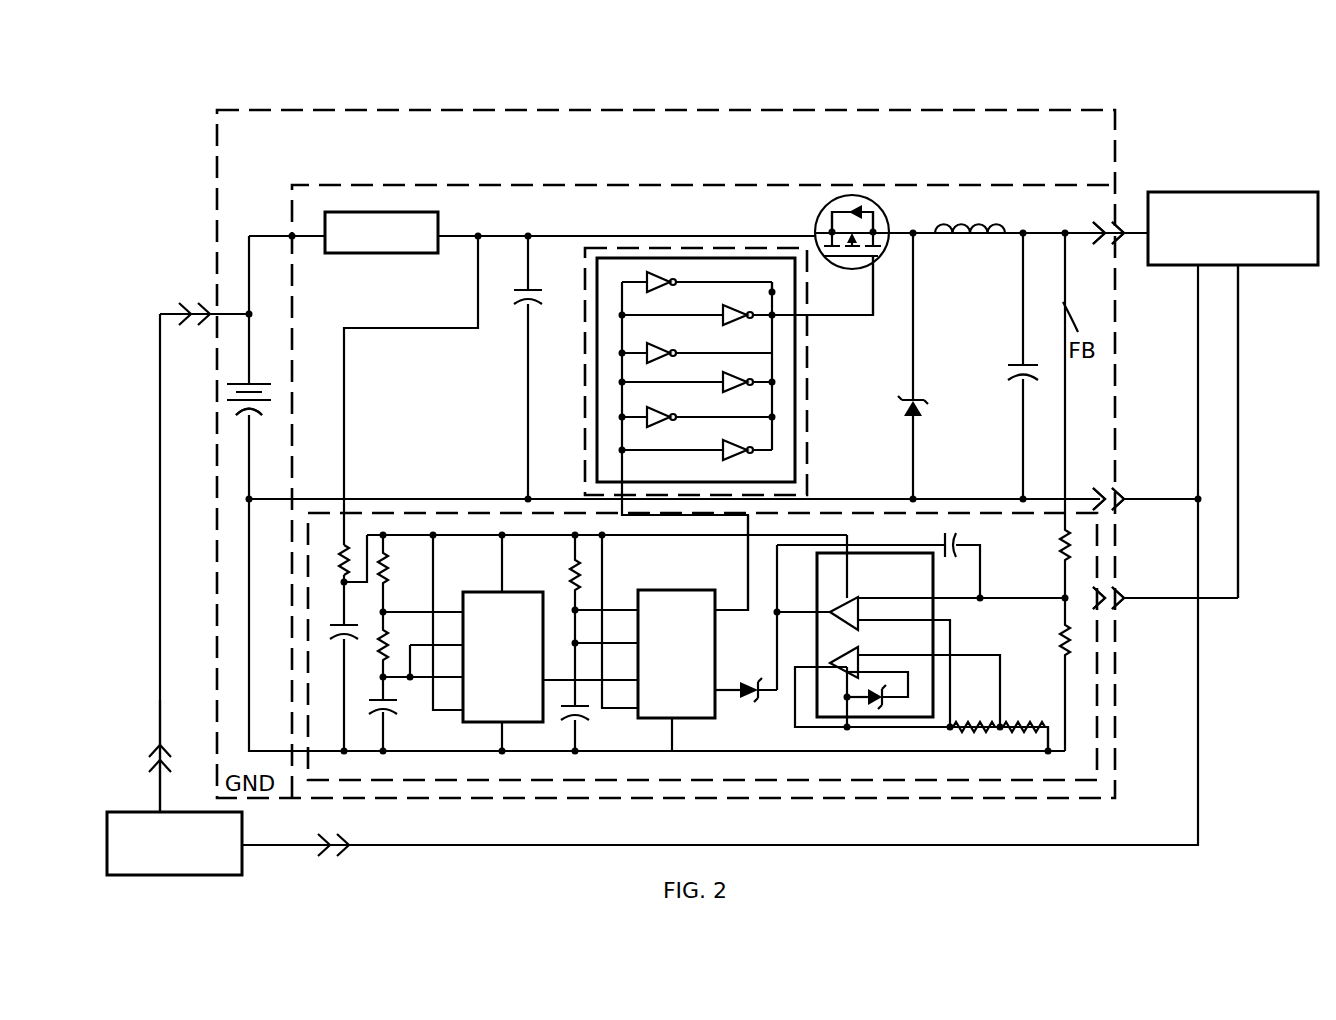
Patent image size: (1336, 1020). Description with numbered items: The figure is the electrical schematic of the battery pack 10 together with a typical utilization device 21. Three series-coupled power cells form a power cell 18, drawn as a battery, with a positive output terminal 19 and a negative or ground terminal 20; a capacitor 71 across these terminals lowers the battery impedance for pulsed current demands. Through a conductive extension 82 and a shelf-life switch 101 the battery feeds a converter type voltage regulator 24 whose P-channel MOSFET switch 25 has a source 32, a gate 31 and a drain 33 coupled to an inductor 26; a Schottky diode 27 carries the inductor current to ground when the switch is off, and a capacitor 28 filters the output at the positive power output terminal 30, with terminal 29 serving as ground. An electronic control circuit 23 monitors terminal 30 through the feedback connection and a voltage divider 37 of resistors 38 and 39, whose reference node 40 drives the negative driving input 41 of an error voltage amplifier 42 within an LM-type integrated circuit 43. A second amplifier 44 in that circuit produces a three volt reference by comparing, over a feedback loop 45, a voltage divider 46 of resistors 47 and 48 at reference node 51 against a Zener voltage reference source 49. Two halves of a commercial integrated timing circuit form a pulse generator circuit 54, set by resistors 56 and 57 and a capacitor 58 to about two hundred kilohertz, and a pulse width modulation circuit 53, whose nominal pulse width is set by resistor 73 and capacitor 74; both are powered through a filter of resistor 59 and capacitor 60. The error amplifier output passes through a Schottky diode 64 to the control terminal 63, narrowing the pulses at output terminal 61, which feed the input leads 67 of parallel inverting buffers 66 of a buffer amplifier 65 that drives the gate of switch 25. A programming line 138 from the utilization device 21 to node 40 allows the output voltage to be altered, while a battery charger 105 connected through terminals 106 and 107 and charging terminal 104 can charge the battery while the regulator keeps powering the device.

The battery pack 10 is at (900, 110).
The power cell 18 is at (225, 383).
The positive output terminal 19 is at (262, 384).
The negative output terminal 20 is at (246, 418).
The utilization device 21 is at (1213, 192).
The electronic control circuit 23 is at (1097, 538).
The converter type voltage regulator 24 is at (636, 187).
The switch 25 is at (866, 283).
The inductor 26 is at (962, 226).
The Schottky diode 27 is at (921, 413).
The capacitor 28 is at (1012, 365).
The ground terminal 29 is at (1118, 465).
The positive power output terminal 30 is at (1115, 205).
The gate 31 is at (880, 263).
The source 32 is at (830, 205).
The drain 33 is at (882, 210).
The voltage divider 37 is at (1077, 582).
The resistor 38 is at (1060, 553).
The resistor 39 is at (1060, 655).
The reference node 40 is at (1062, 597).
The negative driving input 41 is at (925, 599).
The error voltage amplifier 42 is at (843, 617).
The integrated circuit 43 is at (812, 608).
The amplifier 44 is at (842, 680).
The feedback loop 45 is at (800, 730).
The voltage divider 46 is at (983, 746).
The resistor 47 is at (976, 722).
The resistor 48 is at (1022, 732).
The voltage reference source 49 is at (874, 712).
The reference node 51 is at (1006, 724).
The pulse width modulation circuit 53 is at (672, 751).
The pulse generator circuit 54 is at (490, 722).
The resistor 56 is at (385, 550).
The resistor 57 is at (392, 642).
The capacitor 58 is at (365, 706).
The resistor 59 is at (346, 540).
The capacitor 60 is at (330, 628).
The output terminal 61 is at (722, 614).
The control terminal 63 is at (723, 692).
The Schottky diode 64 is at (748, 698).
The buffer amplifier 65 is at (728, 484).
The inverting buffers 66 is at (650, 345).
The input leads 67 is at (657, 450).
The capacitor 71 is at (522, 290).
The resistor 73 is at (568, 590).
The capacitor 74 is at (590, 714).
The conductive extension 82 is at (238, 268).
The switch 101 is at (393, 212).
The charging terminal 104 is at (190, 300).
The battery charger 105 is at (135, 810).
The terminal 106 is at (322, 853).
The terminal 107 is at (143, 760).
The line 138 is at (1244, 540).